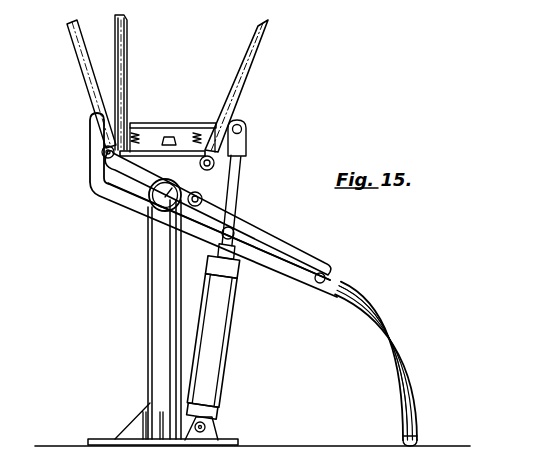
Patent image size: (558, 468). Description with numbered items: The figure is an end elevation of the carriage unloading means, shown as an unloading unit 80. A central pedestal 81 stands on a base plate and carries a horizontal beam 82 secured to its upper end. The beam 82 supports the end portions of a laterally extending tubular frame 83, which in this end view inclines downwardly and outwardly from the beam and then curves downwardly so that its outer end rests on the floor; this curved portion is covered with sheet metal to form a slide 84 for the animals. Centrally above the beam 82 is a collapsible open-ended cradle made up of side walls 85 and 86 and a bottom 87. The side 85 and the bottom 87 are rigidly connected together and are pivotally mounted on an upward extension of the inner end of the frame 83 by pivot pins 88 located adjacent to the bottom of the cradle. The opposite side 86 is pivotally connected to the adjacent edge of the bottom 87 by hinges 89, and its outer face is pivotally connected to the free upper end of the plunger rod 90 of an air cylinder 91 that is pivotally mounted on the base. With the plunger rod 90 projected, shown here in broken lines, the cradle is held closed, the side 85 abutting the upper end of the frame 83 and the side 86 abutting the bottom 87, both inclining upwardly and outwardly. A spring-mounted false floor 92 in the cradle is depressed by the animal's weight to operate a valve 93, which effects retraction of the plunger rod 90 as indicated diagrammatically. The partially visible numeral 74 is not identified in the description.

The seat panel 74 is at (207, 5).
The unloading unit 80 is at (307, 102).
The central pedestal 81 is at (162, 245).
The horizontal beam 82 is at (153, 208).
The tubular frame 83 is at (102, 192).
The slide 84 is at (380, 327).
The side wall 85 is at (70, 42).
The side wall 86 is at (247, 72).
The bottom 87 is at (182, 152).
The pivot pins 88 is at (102, 151).
The hinges 89 is at (203, 197).
The plunger rod 90 is at (216, 163).
The air cylinder 91 is at (233, 312).
The false floor 92 is at (146, 133).
The valve 93 is at (170, 135).